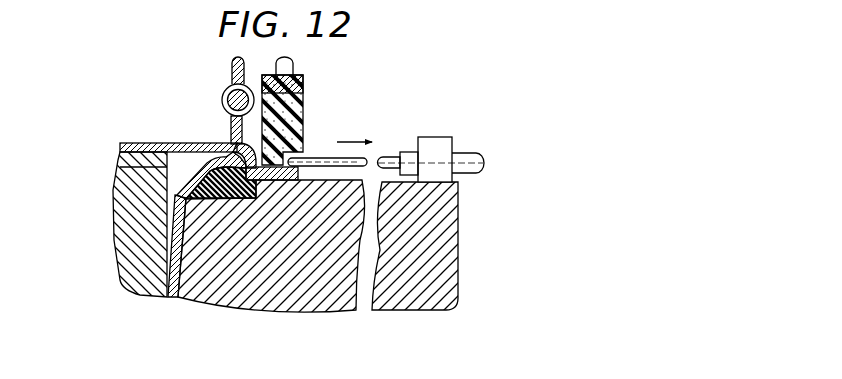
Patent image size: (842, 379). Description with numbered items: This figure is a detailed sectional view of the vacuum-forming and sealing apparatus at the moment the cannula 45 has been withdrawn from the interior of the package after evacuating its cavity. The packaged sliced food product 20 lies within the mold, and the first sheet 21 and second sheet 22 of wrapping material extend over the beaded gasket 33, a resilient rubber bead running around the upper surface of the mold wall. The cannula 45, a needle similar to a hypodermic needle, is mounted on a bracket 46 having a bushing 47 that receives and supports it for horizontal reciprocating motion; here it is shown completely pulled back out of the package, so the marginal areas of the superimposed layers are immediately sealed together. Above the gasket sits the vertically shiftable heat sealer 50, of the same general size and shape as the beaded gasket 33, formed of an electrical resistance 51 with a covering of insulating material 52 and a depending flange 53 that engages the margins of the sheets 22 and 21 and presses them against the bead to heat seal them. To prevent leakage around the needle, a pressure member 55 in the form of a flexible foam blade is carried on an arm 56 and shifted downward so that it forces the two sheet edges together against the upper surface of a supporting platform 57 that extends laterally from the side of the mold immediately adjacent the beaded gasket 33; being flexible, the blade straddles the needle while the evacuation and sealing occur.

The sliced food product 20 is at (127, 244).
The first sheet 21 is at (171, 292).
The second sheet 22 is at (146, 131).
The beaded gasket 33 is at (212, 184).
The cannula 45 is at (312, 161).
The bracket 46 is at (440, 143).
The bushing 47 is at (463, 173).
The heat sealer 50 is at (231, 84).
The electrical resistance 51 is at (228, 110).
The insulating material 52 is at (222, 98).
The depending flange 53 is at (231, 128).
The pressure member 55 is at (303, 101).
The arm 56 is at (294, 66).
The supporting platform 57 is at (443, 282).